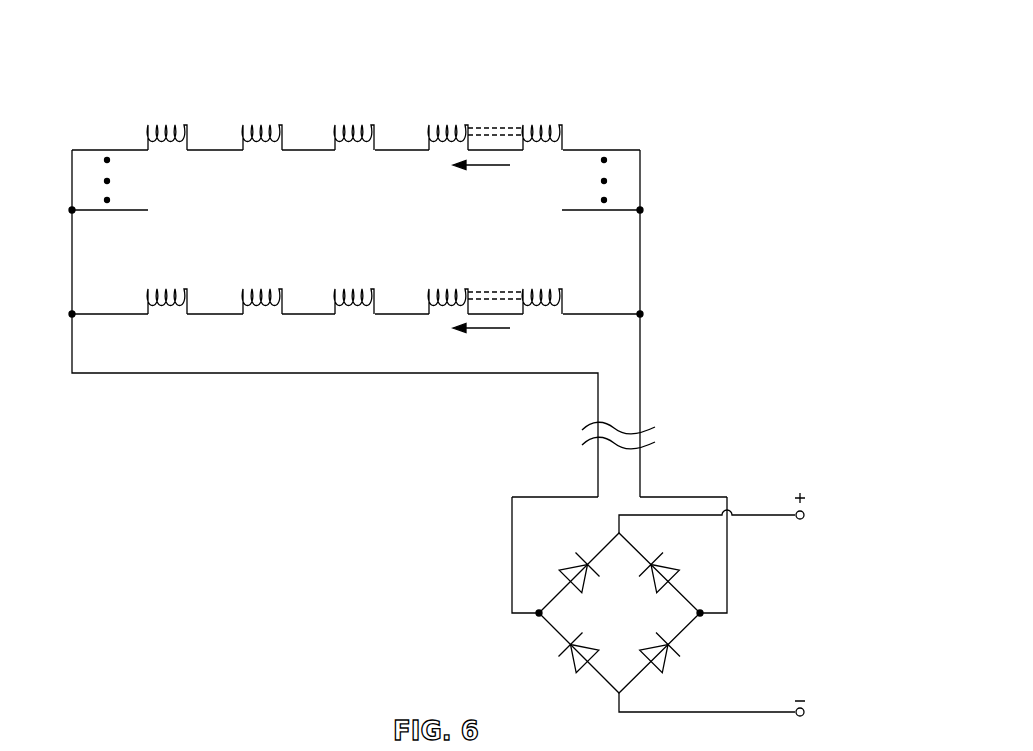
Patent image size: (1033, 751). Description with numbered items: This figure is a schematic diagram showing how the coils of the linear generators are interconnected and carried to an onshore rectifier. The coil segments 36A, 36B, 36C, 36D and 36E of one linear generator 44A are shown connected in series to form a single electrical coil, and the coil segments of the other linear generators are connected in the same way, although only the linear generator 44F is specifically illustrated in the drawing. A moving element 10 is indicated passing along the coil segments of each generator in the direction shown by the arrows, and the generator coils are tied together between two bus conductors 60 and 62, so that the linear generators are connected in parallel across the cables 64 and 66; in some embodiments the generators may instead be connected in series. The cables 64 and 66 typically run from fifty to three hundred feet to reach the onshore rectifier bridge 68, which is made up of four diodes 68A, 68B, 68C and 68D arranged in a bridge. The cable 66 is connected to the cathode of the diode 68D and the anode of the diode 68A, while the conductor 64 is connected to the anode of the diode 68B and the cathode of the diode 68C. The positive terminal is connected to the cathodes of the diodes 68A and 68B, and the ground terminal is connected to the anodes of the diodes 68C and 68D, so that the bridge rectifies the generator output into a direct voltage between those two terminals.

The magnet 10 is at (495, 130).
The coil segment 36A is at (543, 290).
The coil segment 36B is at (450, 290).
The coil segment 36C is at (355, 290).
The coil segment 36D is at (265, 290).
The coil segment 36E is at (170, 290).
The linear generator 44A is at (563, 242).
The linear generator 44F is at (563, 122).
The bus conductor 60 is at (606, 148).
The bus conductor 62 is at (110, 148).
The cable 64 is at (645, 402).
The cable 66 is at (593, 402).
The onshore rectifier bridge 68 is at (603, 622).
The diode 68A is at (573, 563).
The diode 68B is at (668, 563).
The diode 68C is at (667, 660).
The diode 68D is at (570, 657).